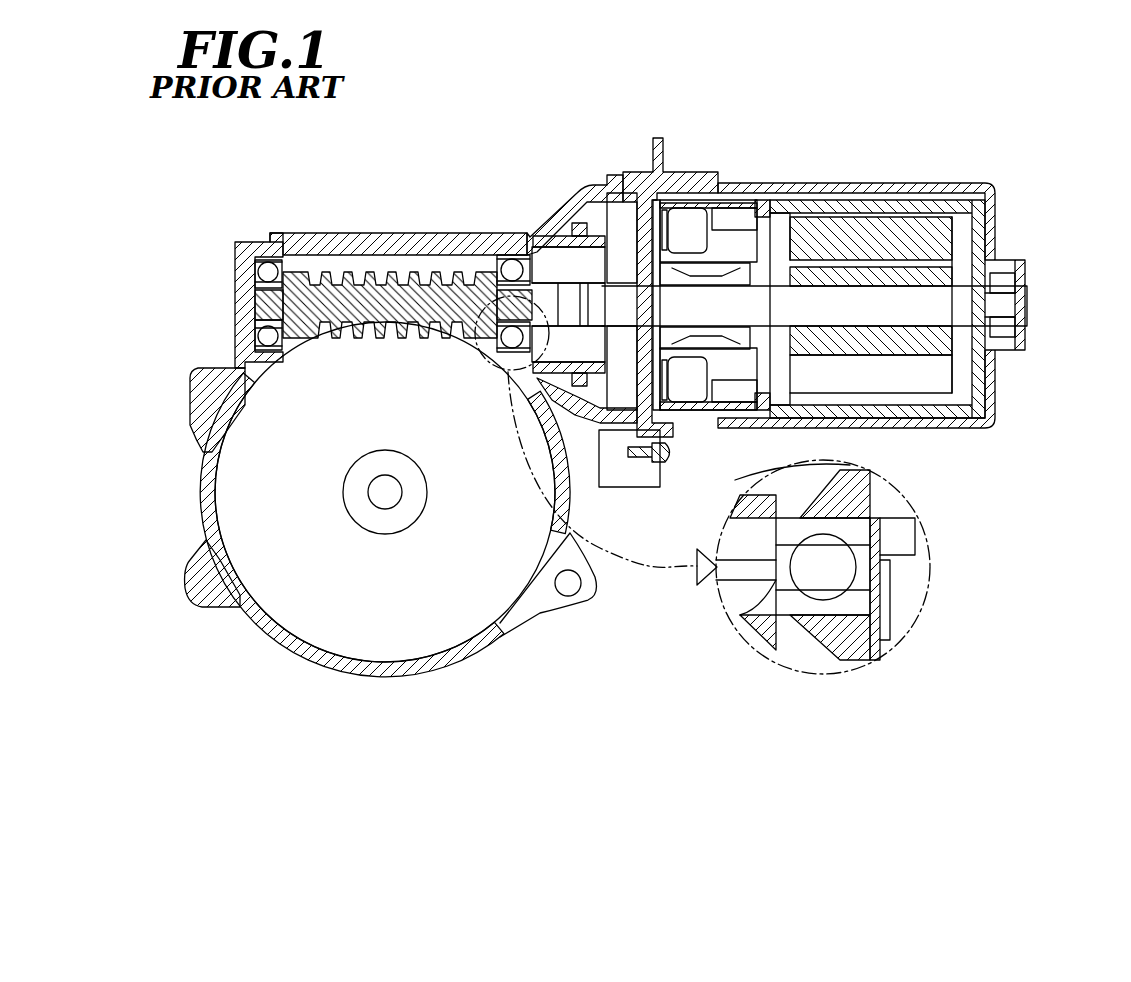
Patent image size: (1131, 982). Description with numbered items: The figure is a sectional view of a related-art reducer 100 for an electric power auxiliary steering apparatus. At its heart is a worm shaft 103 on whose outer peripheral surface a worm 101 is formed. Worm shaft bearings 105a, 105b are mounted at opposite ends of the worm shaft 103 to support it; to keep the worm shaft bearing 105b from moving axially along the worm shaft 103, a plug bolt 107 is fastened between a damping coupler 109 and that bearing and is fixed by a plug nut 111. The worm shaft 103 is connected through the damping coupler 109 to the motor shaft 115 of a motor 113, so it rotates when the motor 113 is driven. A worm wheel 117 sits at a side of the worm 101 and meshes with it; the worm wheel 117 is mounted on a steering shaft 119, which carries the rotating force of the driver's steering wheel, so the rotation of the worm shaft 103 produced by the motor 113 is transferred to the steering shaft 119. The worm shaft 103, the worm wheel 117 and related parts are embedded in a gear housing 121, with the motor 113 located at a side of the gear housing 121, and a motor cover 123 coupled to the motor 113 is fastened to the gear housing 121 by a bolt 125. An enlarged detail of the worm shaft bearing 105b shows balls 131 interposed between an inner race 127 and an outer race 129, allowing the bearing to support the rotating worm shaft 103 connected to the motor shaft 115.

The reducer 100 is at (637, 133).
The worm 101 is at (370, 290).
The worm shaft 103 is at (262, 305).
The worm shaft bearing 105a is at (267, 260).
The worm shaft bearing 105b is at (508, 258).
The plug bolt 107 is at (557, 238).
The damping coupler 109 is at (590, 352).
The plug nut 111 is at (575, 192).
The motor 113 is at (998, 179).
The motor shaft 115 is at (860, 298).
The worm wheel 117 is at (462, 620).
The steering shaft 119 is at (387, 497).
The gear housing 121 is at (384, 242).
The motor cover 123 is at (683, 185).
The bolt 125 is at (672, 457).
The inner race 127 is at (860, 528).
The outer race 129 is at (860, 612).
The balls 131 is at (845, 572).